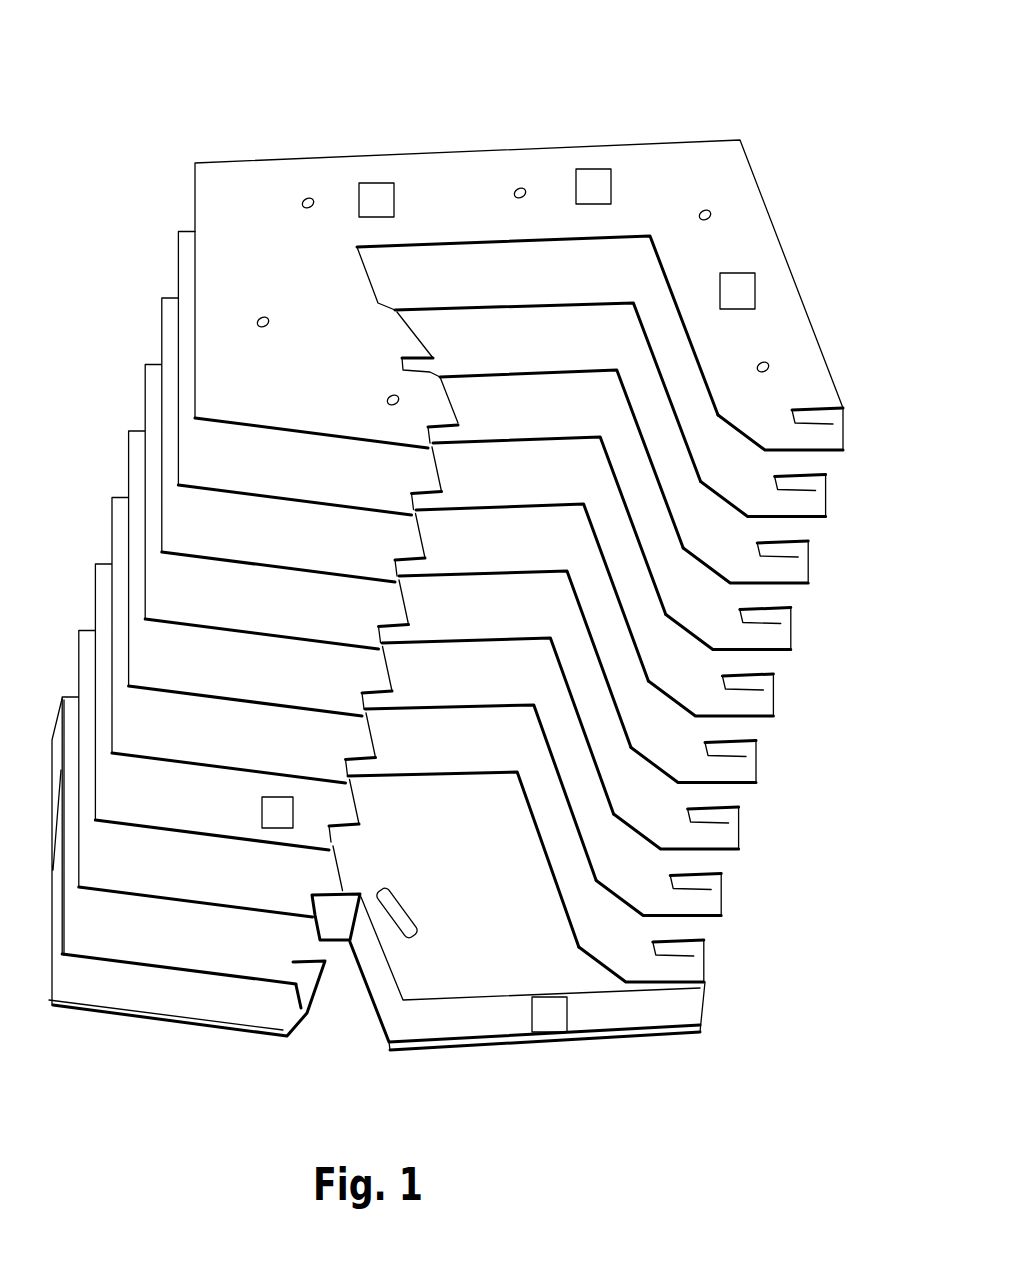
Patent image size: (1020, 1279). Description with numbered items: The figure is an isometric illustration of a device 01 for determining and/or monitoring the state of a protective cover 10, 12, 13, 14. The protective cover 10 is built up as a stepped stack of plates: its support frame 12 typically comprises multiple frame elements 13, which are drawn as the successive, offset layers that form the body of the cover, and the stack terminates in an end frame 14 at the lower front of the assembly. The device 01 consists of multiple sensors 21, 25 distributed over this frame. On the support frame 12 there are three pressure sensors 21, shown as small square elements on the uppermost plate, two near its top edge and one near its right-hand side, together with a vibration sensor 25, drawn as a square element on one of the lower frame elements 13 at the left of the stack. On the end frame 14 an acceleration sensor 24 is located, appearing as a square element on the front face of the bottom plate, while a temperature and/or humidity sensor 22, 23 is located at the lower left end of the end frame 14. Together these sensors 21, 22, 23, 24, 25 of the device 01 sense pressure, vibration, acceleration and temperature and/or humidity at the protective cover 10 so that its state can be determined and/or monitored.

The device 01 is at (600, 95).
The protective cover 10 is at (699, 118).
The support frame 12 is at (222, 205).
The frame elements 13 is at (443, 686).
The end frame 14 is at (665, 1018).
The pressure sensors 21 is at (592, 186).
The temperature and/or humidity sensor 22 is at (62, 872).
The temperature and/or humidity sensor 23 is at (187, 867).
The acceleration sensor 24 is at (548, 1022).
The vibration sensor 25 is at (272, 820).